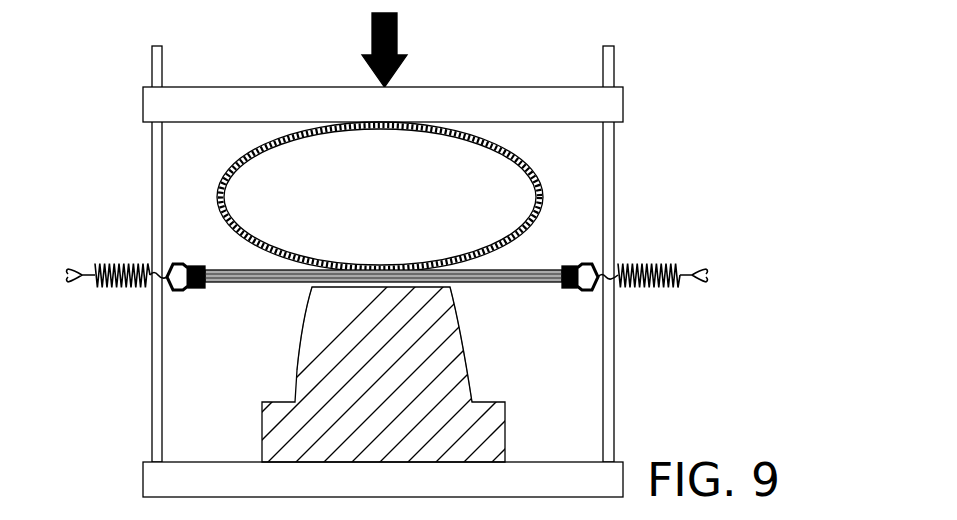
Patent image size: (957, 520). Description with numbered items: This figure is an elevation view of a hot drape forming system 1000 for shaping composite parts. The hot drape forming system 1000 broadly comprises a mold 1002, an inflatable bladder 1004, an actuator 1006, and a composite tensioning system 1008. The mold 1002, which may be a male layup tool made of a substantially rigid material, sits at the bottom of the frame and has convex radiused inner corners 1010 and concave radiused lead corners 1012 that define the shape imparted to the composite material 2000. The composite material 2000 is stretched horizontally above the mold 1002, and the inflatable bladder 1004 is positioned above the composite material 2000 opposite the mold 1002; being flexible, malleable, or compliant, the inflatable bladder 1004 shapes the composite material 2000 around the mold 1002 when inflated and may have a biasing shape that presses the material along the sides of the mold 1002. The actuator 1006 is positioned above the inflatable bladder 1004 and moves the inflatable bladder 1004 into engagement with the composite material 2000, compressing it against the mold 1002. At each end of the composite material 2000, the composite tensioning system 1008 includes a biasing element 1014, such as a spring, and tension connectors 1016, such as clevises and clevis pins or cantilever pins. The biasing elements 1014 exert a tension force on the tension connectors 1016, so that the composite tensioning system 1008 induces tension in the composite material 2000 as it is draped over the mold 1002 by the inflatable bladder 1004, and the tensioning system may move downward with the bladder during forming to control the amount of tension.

The hot drape forming system 1000 is at (203, 43).
The mold 1002 is at (417, 362).
The inflatable bladder 1004 is at (532, 165).
The actuator 1006 is at (470, 87).
The composite tensioning system 1008 is at (116, 310).
The convex radiused inner corners 1010 is at (312, 288).
The concave radiused lead corners 1012 is at (290, 400).
The biasing element 1014 is at (92, 262).
The tension connectors 1016 is at (180, 290).
The composite material 2000 is at (505, 273).